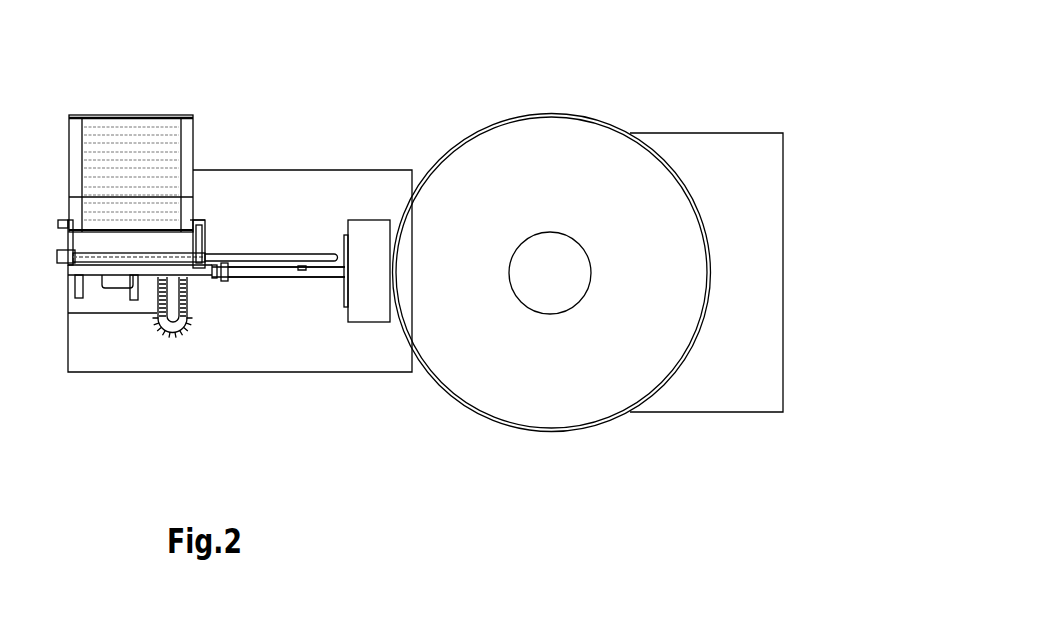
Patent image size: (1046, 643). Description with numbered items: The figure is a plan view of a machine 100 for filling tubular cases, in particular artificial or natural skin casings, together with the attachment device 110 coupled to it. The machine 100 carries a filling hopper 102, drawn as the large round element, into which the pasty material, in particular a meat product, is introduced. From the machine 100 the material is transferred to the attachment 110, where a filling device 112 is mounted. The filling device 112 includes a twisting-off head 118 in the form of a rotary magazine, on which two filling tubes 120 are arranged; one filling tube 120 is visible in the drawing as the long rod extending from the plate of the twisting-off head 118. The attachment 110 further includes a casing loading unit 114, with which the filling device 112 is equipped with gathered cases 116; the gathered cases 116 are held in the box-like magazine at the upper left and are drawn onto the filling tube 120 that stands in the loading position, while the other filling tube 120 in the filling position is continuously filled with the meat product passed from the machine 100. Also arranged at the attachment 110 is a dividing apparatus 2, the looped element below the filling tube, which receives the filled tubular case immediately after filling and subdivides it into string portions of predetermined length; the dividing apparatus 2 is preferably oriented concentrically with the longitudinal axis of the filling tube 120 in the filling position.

The machine 100 is at (649, 459).
The filling hopper 102 is at (535, 114).
The attachment device 110 is at (111, 405).
The filling device 112 is at (333, 212).
The casing loading unit 114 is at (209, 211).
The gathered cases 116 is at (145, 140).
The twisting-off head 118 is at (367, 314).
The filling tube 120 is at (305, 274).
The dividing apparatus 2 is at (146, 300).